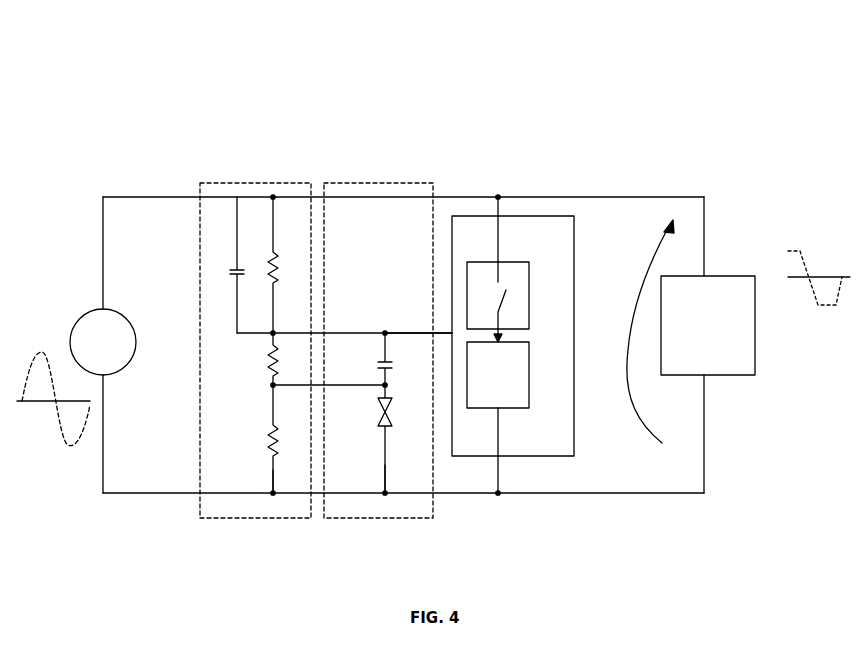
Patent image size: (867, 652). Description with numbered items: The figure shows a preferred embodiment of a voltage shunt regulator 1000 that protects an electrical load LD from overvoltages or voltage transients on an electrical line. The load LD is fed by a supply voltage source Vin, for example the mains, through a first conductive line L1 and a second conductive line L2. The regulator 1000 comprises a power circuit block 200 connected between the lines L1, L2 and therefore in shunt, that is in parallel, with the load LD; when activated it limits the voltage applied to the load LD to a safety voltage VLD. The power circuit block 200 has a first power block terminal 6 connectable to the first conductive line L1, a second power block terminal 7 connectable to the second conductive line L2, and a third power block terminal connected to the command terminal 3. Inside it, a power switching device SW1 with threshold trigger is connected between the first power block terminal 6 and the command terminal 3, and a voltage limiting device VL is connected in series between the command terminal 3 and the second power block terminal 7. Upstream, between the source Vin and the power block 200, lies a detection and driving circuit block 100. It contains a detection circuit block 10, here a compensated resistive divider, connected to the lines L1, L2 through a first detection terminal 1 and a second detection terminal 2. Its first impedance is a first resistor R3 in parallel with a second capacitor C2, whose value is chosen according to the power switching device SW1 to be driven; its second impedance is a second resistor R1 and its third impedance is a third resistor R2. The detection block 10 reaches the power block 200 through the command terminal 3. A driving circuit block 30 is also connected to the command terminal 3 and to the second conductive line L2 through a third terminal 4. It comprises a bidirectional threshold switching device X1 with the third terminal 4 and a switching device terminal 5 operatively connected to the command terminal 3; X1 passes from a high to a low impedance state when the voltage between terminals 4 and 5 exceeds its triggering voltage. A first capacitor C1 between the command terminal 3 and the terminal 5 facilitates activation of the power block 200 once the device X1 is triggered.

The voltage shunt regulator 1000 is at (548, 114).
The detection and driving circuit block 100 is at (341, 170).
The detection circuit block 10 is at (262, 183).
The first detection terminal 1 is at (284, 188).
The driving circuit block 30 is at (378, 183).
The command terminal 3 is at (440, 332).
The first power block terminal 6 is at (498, 197).
The power circuit block 200 is at (562, 216).
The first conductive line L1 is at (172, 197).
The second conductive line L2 is at (162, 493).
The second detection terminal 2 is at (273, 475).
The third terminal 4 is at (385, 470).
The switching device terminal 5 is at (390, 386).
The second power block terminal 7 is at (498, 473).
The voltage limiting device VL is at (529, 382).
The safety voltage VLD is at (704, 440).
The electrical load LD is at (718, 276).
The power switching device with threshold trigger SW1 is at (518, 275).
The first capacitor C1 is at (383, 365).
The second capacitor C2 is at (236, 271).
The second resistor R1 is at (278, 370).
The third resistor R2 is at (278, 445).
The first resistor R3 is at (278, 262).
The threshold switching device X1 is at (378, 414).
The supply voltage source Vin is at (82, 313).